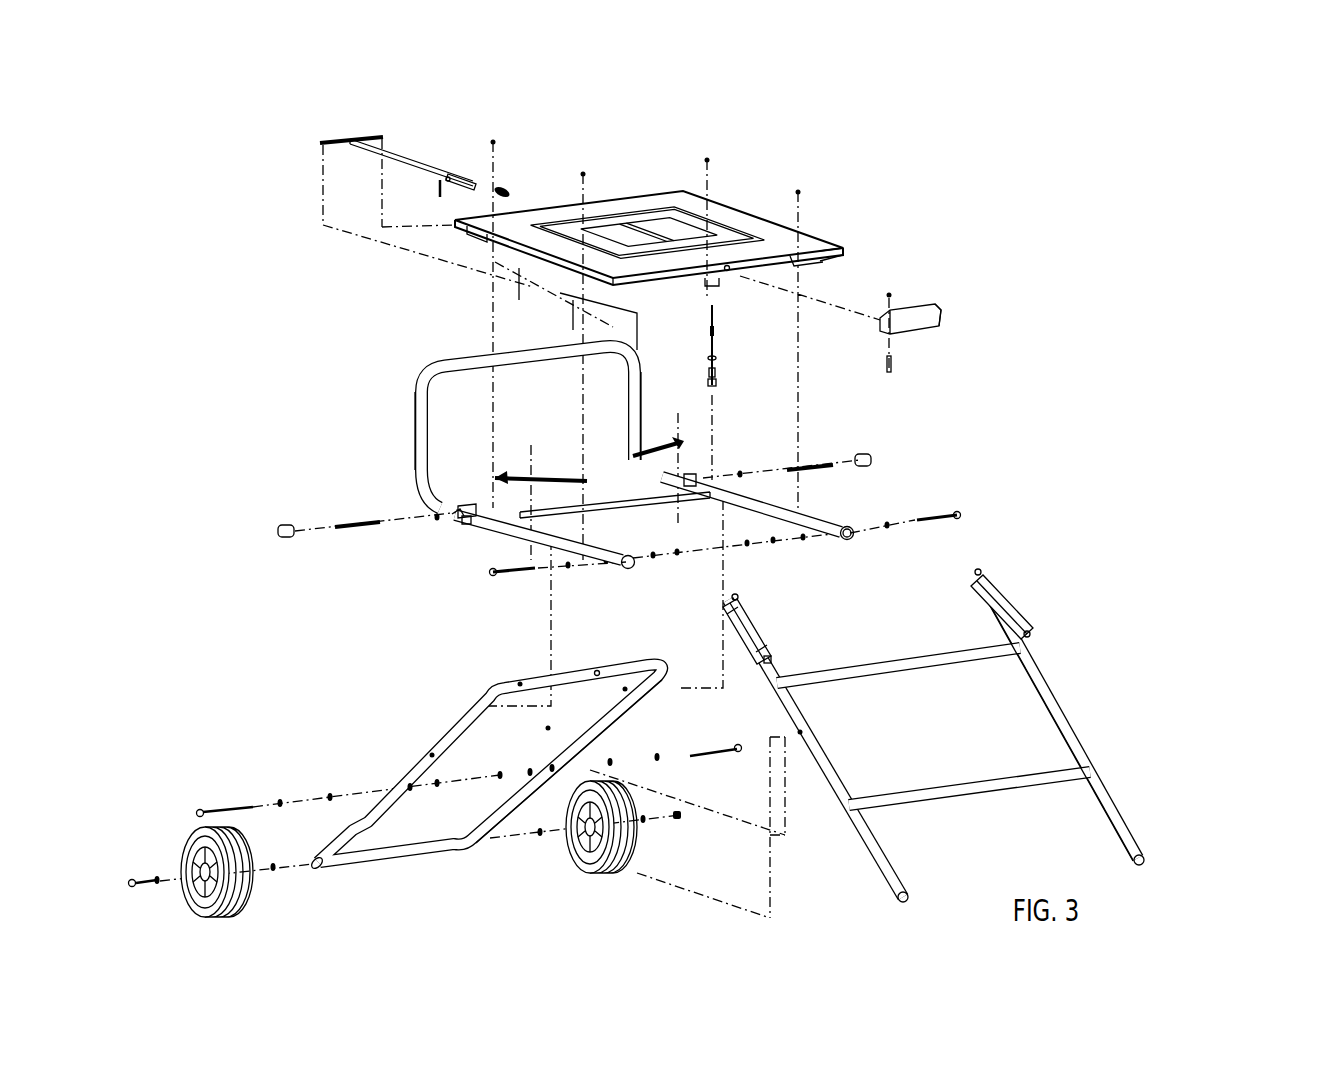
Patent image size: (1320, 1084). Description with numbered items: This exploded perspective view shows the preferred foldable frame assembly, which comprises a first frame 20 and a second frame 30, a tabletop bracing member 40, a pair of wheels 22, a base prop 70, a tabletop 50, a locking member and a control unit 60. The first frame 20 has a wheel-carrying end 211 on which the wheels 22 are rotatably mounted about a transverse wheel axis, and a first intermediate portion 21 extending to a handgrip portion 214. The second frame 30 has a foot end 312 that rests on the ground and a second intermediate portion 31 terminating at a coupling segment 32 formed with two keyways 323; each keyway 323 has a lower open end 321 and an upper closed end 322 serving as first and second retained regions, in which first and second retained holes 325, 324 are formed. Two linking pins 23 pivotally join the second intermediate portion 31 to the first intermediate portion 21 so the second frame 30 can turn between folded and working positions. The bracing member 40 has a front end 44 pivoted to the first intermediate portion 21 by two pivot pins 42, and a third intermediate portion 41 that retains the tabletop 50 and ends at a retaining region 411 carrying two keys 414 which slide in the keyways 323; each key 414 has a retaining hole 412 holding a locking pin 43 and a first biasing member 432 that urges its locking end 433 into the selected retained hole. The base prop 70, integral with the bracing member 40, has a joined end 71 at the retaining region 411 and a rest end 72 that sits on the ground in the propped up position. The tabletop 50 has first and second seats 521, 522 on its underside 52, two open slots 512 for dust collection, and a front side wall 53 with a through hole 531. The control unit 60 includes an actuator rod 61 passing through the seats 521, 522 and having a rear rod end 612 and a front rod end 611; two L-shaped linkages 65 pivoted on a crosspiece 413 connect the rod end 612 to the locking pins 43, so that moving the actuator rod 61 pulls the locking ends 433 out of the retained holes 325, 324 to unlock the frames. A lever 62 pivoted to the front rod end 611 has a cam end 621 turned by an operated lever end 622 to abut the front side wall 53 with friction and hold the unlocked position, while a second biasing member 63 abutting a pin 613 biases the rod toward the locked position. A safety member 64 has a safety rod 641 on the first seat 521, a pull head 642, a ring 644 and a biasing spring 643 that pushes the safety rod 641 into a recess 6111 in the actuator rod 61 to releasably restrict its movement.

The first frame 20 is at (417, 746).
The first intermediate portion 21 is at (610, 736).
The wheel-carrying end 211 is at (325, 872).
The handgrip portion 214 is at (597, 673).
The wheels 22 is at (186, 846).
The linking pins 23 is at (732, 747).
The second frame 30 is at (1087, 714).
The second intermediate portion 31 is at (1087, 752).
The foot end 312 is at (1146, 858).
The coupling segment 32 is at (1012, 604).
The lower open end 321 is at (1032, 636).
The upper closed end 322 is at (975, 573).
The keyways 323 is at (752, 622).
The second retained holes 324 is at (740, 600).
The first retained holes 325 is at (772, 658).
The tabletop bracing member 40 is at (453, 526).
The third intermediate portion 41 is at (498, 530).
The retaining region 411 is at (466, 504).
The retaining hole 412 is at (458, 509).
The crosspiece 413 is at (643, 505).
The keys 414 is at (699, 478).
The pivot pins 42 is at (927, 517).
The locking pins 43 is at (835, 467).
The first biasing members 432 is at (378, 522).
The locking end 433 is at (286, 525).
The front end 44 is at (850, 542).
The tabletop 50 is at (729, 201).
The open slots 512 is at (660, 232).
The underside 52 is at (840, 252).
The first seat 521 is at (721, 286).
The second seat 522 is at (612, 243).
The front side wall 53 is at (795, 264).
The through hole 531 is at (730, 269).
The control unit 60 is at (415, 153).
The actuator rod 61 is at (440, 162).
The front rod end 611 is at (462, 176).
The recess 6111 is at (446, 181).
The rear rod end 612 is at (333, 140).
The pin 613 is at (436, 187).
The lever 62 is at (915, 330).
The cam end 621 is at (892, 298).
The operated lever end 622 is at (942, 313).
The second biasing member 63 is at (506, 189).
The safety member 64 is at (708, 370).
The safety rod 641 is at (718, 378).
The pull head 642 is at (718, 395).
The biasing spring 643 is at (710, 330).
The ring 644 is at (718, 360).
The L-shaped linkages 65 is at (645, 455).
The base prop 70 is at (407, 365).
The joined end 71 is at (626, 447).
The rest end 72 is at (414, 400).